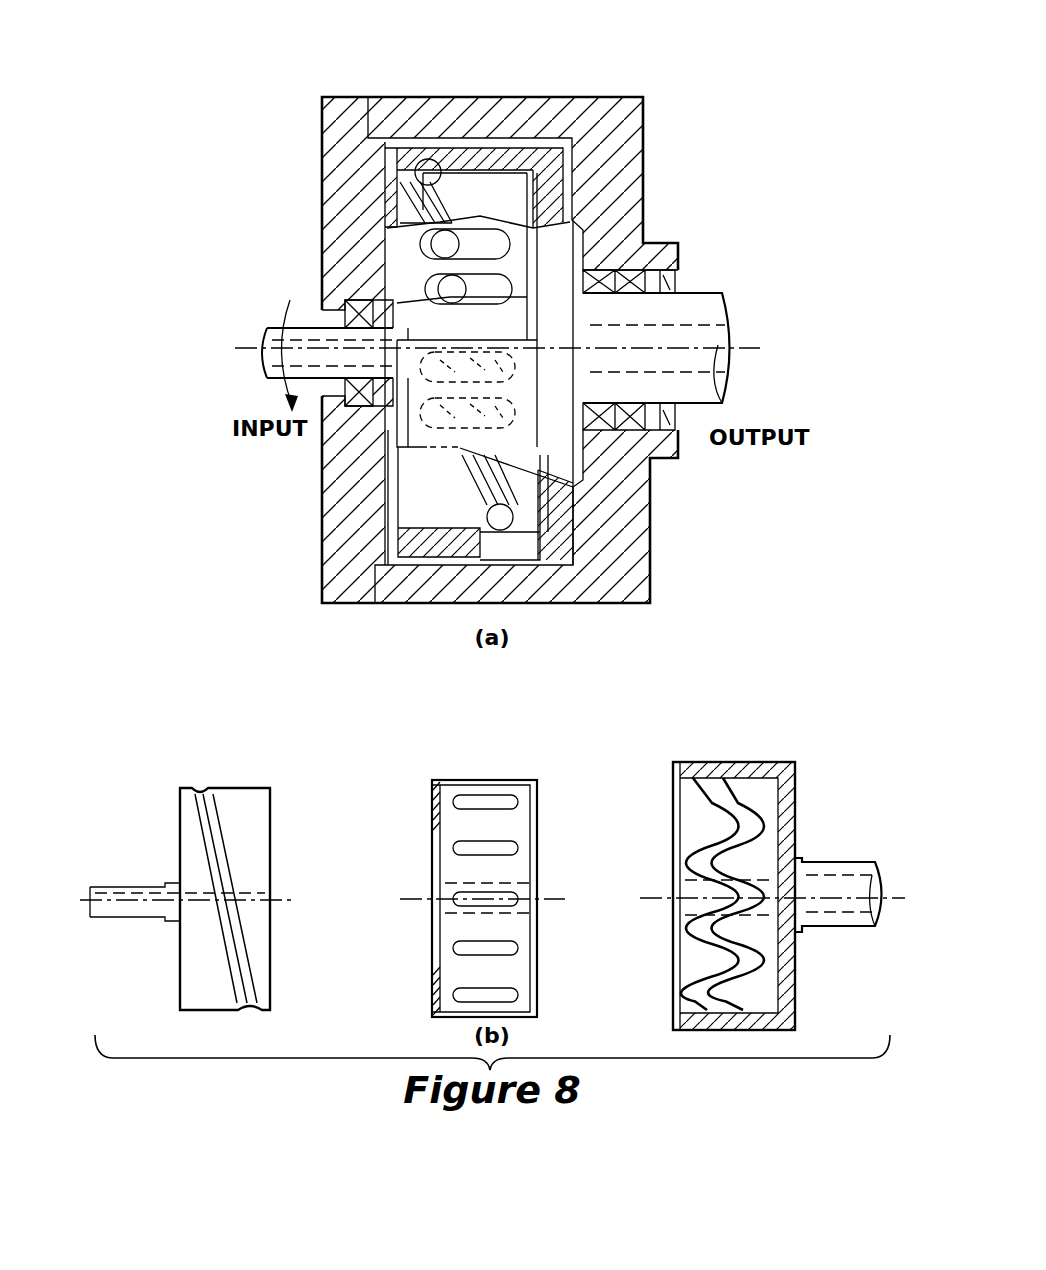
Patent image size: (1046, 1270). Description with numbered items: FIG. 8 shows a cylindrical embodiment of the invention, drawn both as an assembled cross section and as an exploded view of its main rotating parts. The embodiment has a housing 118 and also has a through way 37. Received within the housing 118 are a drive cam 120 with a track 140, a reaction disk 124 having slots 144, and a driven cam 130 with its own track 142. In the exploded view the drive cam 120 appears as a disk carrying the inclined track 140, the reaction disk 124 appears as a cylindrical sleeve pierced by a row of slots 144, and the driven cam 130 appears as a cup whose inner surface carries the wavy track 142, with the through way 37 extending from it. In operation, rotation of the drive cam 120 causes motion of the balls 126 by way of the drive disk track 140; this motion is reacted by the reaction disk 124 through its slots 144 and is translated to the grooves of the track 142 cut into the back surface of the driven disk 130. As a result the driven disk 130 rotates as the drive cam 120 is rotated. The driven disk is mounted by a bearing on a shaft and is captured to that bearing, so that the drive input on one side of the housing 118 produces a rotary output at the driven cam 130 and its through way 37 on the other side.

The housing 118 is at (372, 97).
The track 140 is at (450, 190).
The ball 126 is at (440, 245).
The slots 144 is at (508, 238).
The driven cam 130 is at (557, 255).
The through way 37 is at (718, 347).
The track 142 is at (440, 407).
The drive cam 120 is at (425, 462).
The reaction disk 124 is at (463, 780).